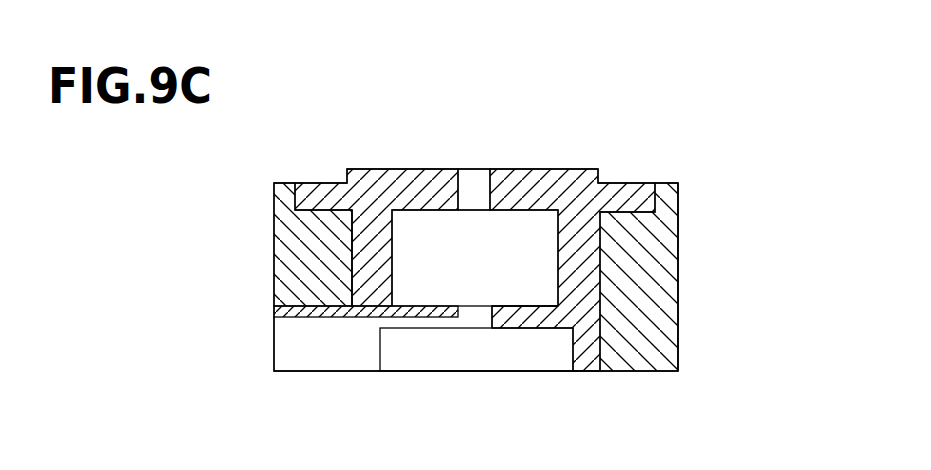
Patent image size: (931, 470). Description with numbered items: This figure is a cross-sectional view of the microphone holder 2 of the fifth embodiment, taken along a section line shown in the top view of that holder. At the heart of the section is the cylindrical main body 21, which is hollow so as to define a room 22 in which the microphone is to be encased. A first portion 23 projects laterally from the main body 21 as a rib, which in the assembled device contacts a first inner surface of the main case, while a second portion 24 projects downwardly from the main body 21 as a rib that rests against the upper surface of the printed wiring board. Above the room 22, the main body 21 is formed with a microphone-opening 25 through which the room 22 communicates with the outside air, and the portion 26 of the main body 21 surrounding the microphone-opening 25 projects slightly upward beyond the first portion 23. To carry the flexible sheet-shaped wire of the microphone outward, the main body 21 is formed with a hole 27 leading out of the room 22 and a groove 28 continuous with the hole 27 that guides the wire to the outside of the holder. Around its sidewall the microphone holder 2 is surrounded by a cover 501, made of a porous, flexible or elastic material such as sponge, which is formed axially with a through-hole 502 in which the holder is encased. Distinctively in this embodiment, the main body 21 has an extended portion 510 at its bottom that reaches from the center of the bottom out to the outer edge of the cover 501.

The microphone holder 2 is at (606, 242).
The main body 21 is at (352, 260).
The room 22 is at (552, 282).
The first portion 23 is at (645, 181).
The second portion 24 is at (582, 371).
The microphone-opening 25 is at (490, 208).
The portion around the microphone-opening 26 is at (558, 169).
The hole 27 is at (487, 318).
The groove 28 is at (431, 318).
The cover 501 is at (680, 354).
The through-hole 502 is at (352, 275).
The extended portion 510 is at (295, 318).